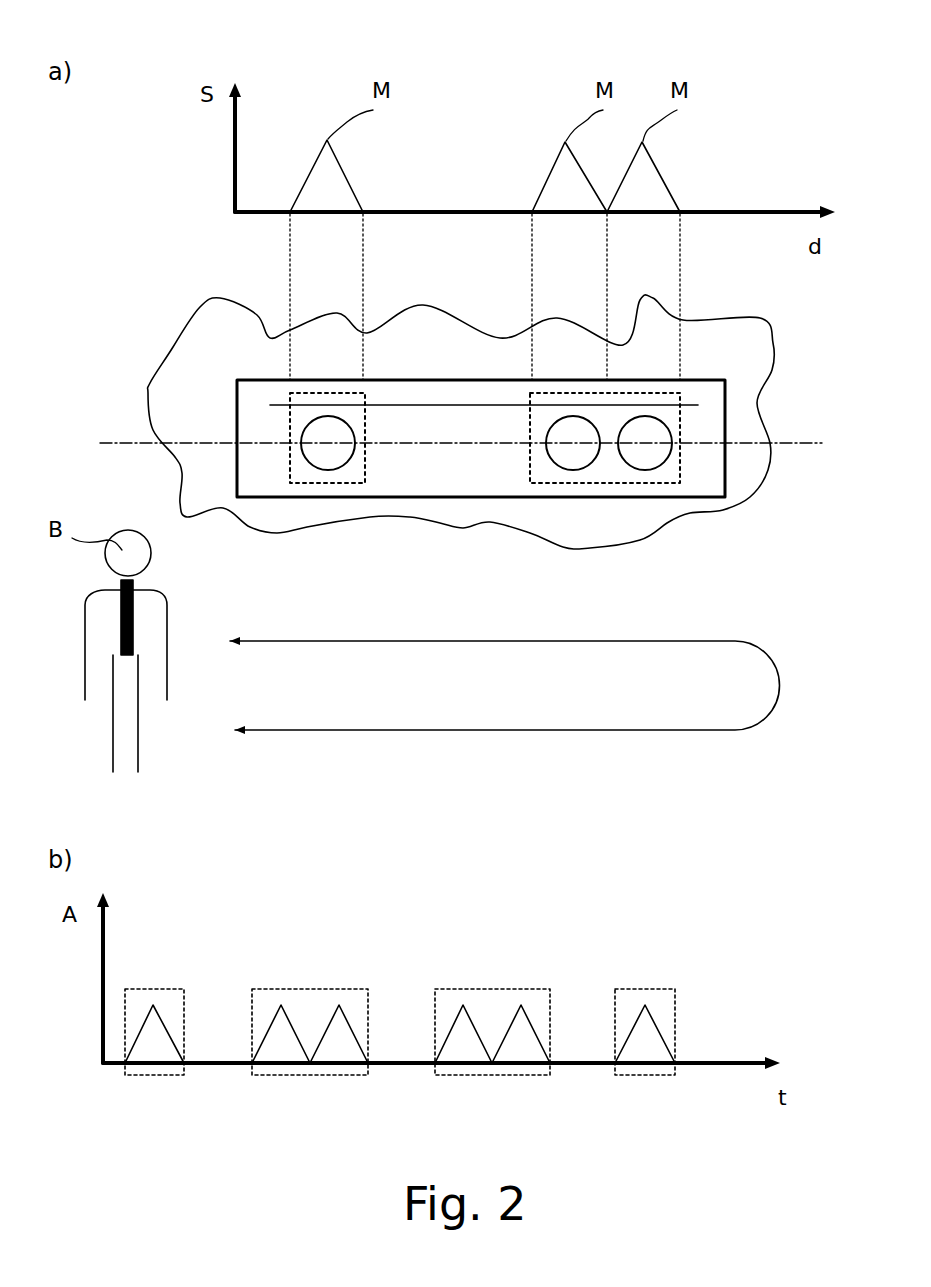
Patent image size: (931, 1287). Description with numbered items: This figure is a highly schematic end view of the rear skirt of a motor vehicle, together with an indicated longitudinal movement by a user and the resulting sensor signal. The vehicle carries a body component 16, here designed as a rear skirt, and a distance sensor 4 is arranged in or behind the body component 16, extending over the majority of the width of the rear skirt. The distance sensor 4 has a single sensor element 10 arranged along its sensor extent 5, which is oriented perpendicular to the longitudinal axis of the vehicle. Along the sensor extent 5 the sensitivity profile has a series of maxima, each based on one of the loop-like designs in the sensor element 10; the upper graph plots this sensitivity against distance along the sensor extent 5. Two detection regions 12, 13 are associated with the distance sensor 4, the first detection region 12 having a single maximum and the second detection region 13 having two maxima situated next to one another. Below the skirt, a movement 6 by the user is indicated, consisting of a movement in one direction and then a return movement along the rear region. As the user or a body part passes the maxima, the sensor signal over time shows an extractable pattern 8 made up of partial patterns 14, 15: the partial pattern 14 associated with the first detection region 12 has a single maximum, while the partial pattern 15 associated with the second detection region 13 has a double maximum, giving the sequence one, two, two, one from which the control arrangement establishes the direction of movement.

The distance sensor 4 is at (237, 413).
The sensor extent 5 is at (795, 443).
The movement by the user 6 is at (462, 641).
The pattern 8 is at (383, 928).
The sensor element 10 is at (443, 407).
The first detection region 12 is at (287, 453).
The second detection region 13 is at (683, 457).
The partial pattern 14 is at (657, 1077).
The partial pattern 15 is at (500, 1077).
The body component 16 is at (205, 333).